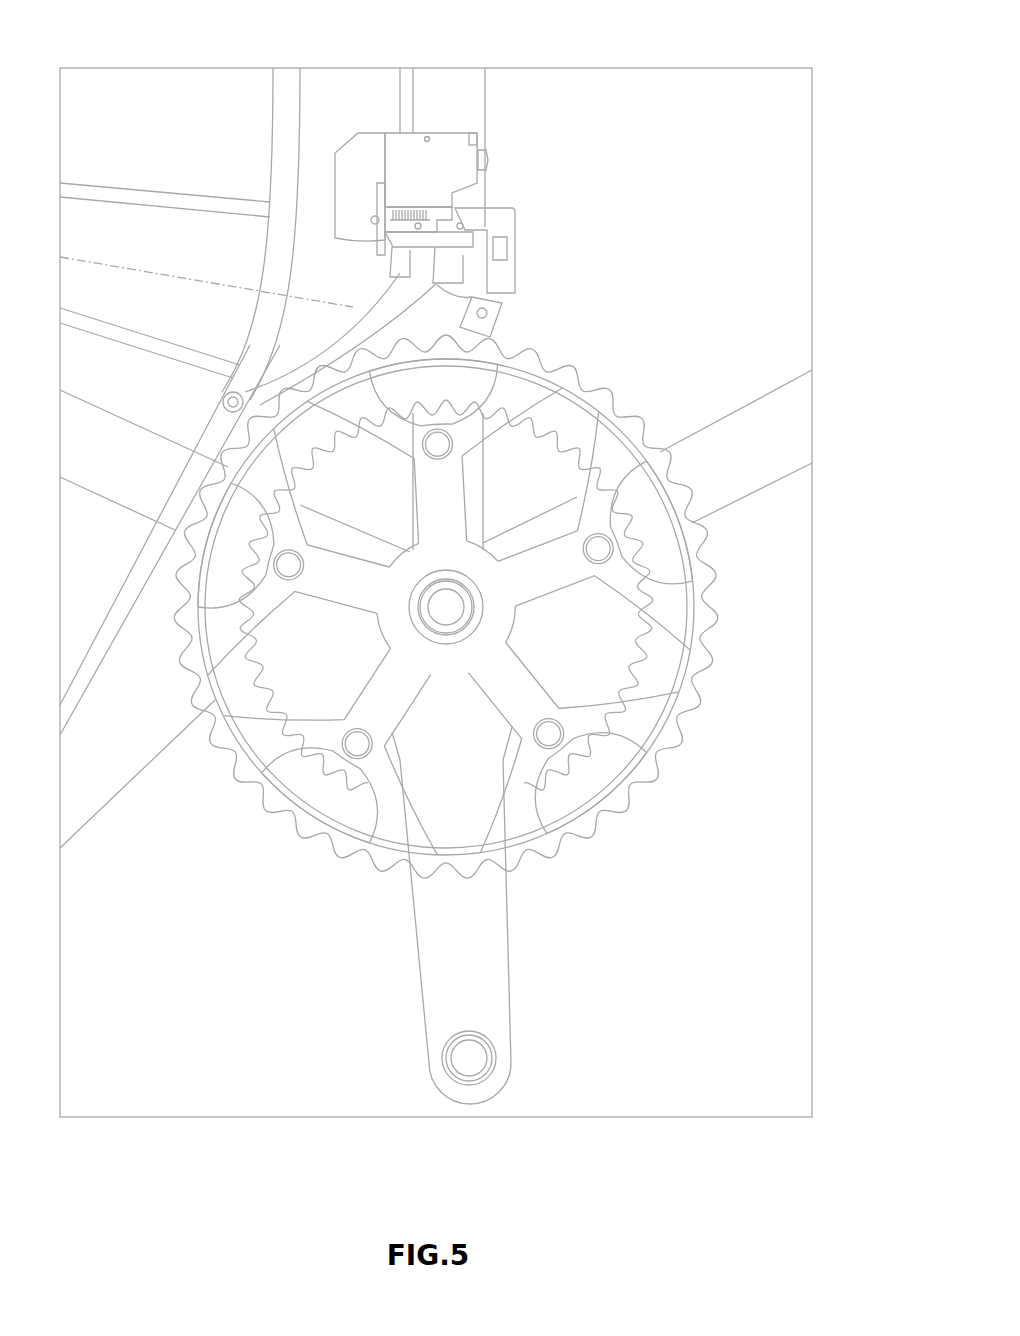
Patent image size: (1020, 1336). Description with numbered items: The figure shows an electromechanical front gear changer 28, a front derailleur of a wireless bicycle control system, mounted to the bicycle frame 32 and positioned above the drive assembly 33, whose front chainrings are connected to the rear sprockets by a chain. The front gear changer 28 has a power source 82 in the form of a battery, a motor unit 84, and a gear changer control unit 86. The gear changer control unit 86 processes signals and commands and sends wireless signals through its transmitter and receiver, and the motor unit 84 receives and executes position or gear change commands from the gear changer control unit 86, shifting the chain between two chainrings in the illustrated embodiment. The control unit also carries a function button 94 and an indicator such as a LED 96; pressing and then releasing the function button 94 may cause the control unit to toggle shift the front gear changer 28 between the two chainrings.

The electromechanical front gear changer 28 is at (356, 203).
The bicycle frame 32 is at (473, 82).
The drive assembly 33 is at (607, 856).
The power source 82 is at (357, 168).
The motor unit 84 is at (437, 175).
The gear changer control unit 86 is at (407, 163).
The function button 94 is at (487, 148).
The LED 96 is at (516, 171).